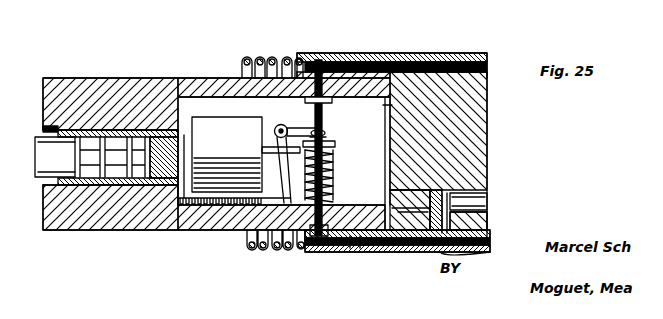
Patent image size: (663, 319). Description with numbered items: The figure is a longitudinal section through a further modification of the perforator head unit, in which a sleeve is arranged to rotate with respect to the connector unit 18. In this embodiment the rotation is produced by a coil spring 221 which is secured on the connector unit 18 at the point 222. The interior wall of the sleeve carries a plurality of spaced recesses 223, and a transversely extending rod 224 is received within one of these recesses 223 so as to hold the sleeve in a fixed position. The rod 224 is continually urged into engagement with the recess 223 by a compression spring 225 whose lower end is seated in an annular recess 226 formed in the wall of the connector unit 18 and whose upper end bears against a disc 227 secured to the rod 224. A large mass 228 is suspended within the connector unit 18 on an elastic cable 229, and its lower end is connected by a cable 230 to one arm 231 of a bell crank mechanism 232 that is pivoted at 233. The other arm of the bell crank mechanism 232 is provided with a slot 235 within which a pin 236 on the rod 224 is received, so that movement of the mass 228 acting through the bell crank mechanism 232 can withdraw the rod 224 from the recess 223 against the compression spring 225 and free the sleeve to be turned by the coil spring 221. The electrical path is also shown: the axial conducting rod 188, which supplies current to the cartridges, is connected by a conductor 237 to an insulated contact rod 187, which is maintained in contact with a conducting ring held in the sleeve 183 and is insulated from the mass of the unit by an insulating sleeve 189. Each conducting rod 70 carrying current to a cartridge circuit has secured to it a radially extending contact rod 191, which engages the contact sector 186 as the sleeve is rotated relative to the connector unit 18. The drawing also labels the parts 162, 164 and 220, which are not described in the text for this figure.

The connector unit 18 is at (112, 98).
The conducting rod 70 is at (472, 202).
The cover block 162 is at (383, 64).
The lining plate 164 is at (387, 57).
The sleeve 183 is at (485, 230).
The contact sector 186 is at (492, 248).
The contact rod 187 is at (402, 252).
The axial conducting rod 188 is at (52, 145).
The insulating sleeve 189 is at (357, 252).
The contact rod 191 is at (440, 200).
The conductor 220 is at (242, 4).
The coil spring 221 is at (243, 60).
The point 222 is at (250, 232).
The recesses 223 is at (318, 60).
The transversely extending rod 224 is at (353, 62).
The compression spring 225 is at (333, 170).
The annular recess 226 is at (343, 247).
The disc 227 is at (333, 150).
The large mass 228 is at (173, 224).
The elastic cable 229 is at (103, 226).
The cable 230 is at (250, 250).
The arm 231 is at (295, 129).
The bell crank mechanism 232 is at (285, 127).
The pivot 233 is at (276, 132).
The slot 235 is at (328, 137).
The pin 236 is at (326, 133).
The conductor 237 is at (200, 203).